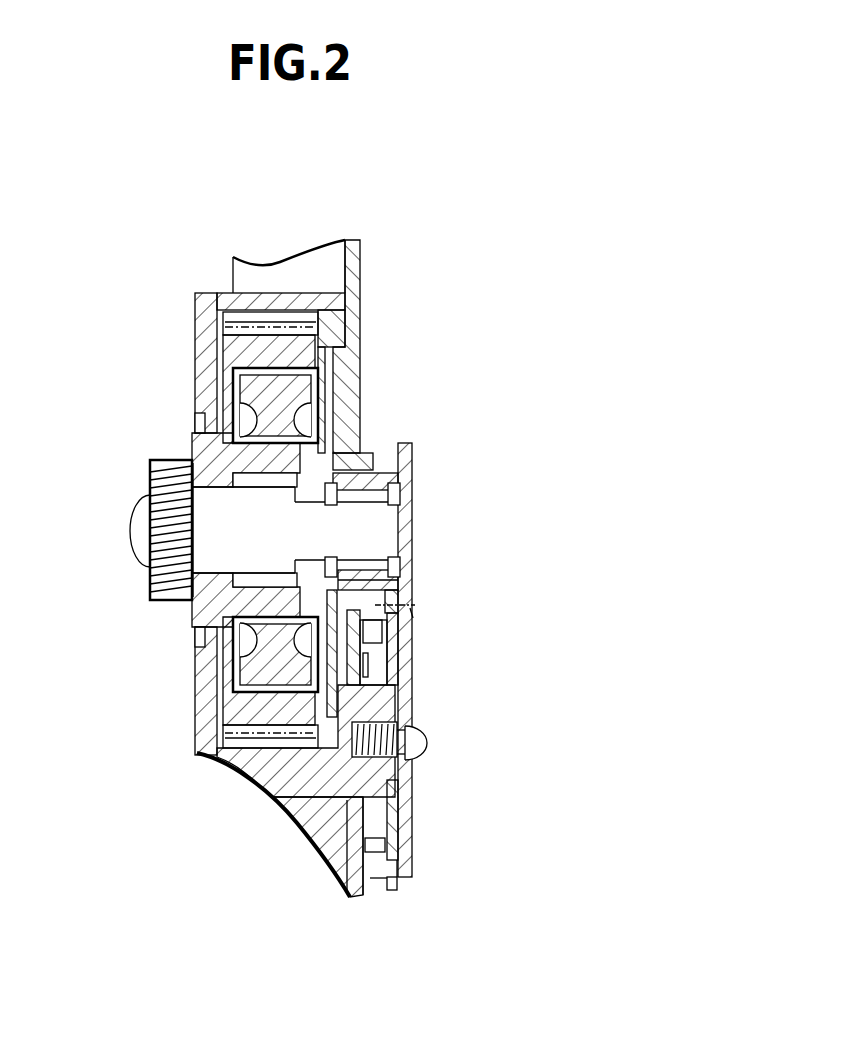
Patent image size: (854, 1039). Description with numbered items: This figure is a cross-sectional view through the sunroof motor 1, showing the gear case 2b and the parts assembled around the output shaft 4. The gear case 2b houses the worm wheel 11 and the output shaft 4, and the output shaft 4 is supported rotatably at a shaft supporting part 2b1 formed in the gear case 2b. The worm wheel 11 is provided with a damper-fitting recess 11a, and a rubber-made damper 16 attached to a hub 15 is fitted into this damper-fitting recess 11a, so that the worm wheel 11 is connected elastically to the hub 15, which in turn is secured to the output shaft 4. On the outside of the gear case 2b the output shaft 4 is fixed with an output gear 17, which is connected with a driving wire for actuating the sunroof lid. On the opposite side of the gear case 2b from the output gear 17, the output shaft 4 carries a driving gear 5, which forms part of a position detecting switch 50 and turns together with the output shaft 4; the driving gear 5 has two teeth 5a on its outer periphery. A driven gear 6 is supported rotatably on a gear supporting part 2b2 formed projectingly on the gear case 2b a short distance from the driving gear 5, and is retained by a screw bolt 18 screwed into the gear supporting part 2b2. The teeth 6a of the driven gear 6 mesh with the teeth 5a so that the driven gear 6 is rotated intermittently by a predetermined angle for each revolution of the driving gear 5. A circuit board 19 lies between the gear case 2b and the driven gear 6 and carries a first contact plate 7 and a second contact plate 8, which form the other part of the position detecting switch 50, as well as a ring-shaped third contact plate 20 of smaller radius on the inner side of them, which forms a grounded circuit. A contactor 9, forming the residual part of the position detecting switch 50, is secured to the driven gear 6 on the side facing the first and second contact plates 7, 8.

The sunroof motor 1 is at (361, 313).
The gear case 2b is at (195, 345).
The shaft supporting part 2b1 is at (242, 483).
The gear supporting part 2b2 is at (385, 764).
The output shaft 4 is at (240, 560).
The driving gear 5 is at (413, 472).
The teeth 5a is at (388, 594).
The position detecting switch 50 is at (415, 613).
The driven gear 6 is at (413, 830).
The teeth 6a is at (392, 891).
The first contact plate 7 is at (347, 842).
The second contact plate 8 is at (364, 633).
The contactor 9 is at (385, 848).
The worm wheel 11 is at (242, 320).
The damper-fitting recess 11a is at (262, 698).
The hub 15 is at (244, 476).
The damper 16 is at (258, 403).
The output gear 17 is at (150, 577).
The screw bolt 18 is at (428, 747).
The circuit board 19 is at (347, 835).
The third contact plate 20 is at (407, 670).